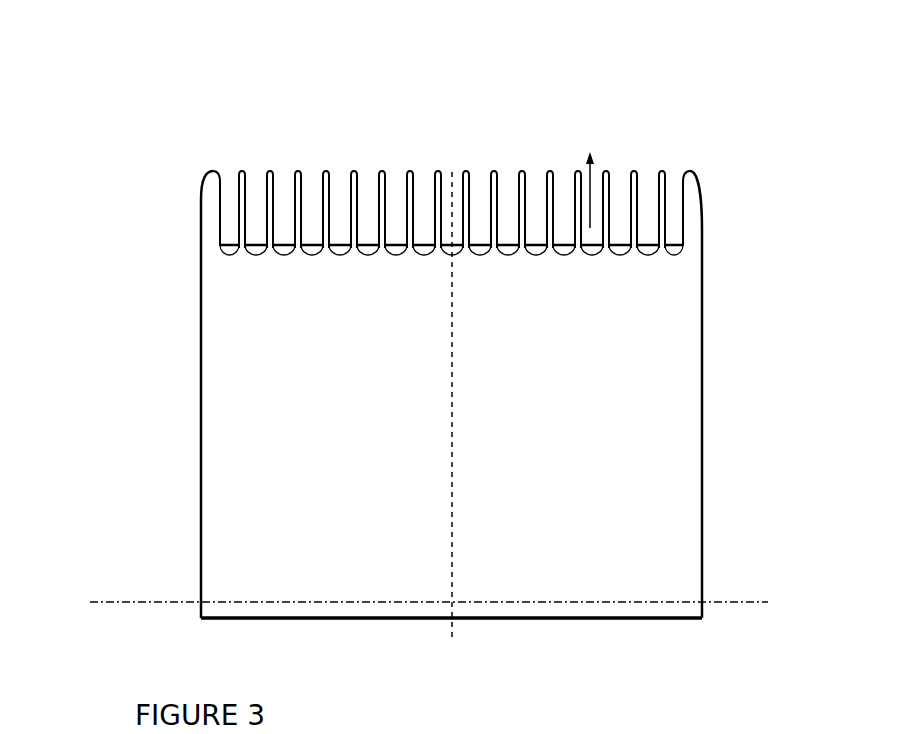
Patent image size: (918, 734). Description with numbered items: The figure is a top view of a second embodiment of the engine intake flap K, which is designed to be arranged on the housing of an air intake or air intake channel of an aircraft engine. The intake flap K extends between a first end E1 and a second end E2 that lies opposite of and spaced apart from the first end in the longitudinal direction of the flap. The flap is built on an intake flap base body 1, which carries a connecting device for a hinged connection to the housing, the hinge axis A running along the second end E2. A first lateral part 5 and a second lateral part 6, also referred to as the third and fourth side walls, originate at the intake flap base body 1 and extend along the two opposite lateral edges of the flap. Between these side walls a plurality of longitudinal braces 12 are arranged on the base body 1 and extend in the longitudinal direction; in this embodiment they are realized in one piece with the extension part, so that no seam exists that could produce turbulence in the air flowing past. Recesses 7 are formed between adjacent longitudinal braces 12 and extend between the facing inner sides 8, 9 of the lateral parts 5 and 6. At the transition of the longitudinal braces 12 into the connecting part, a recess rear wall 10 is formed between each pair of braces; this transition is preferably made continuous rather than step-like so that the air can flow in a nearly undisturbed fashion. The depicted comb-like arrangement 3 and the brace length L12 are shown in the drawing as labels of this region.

The intake flap base body 1 is at (212, 578).
The comb cutting unit 3 is at (445, 213).
The first lateral part 5 is at (208, 224).
The second lateral part 6 is at (698, 240).
The recesses 7 is at (233, 185).
The inner side of lateral part 8 is at (676, 190).
The inner side of lateral part 9 is at (225, 178).
The recess rear wall 10 is at (592, 250).
The longitudinal braces 12 is at (443, 170).
The tooth length L12 is at (593, 172).
The engine intake flap K is at (162, 88).
The first end E1 is at (699, 56).
The second end E2 is at (662, 650).
The hinge axis A is at (740, 602).